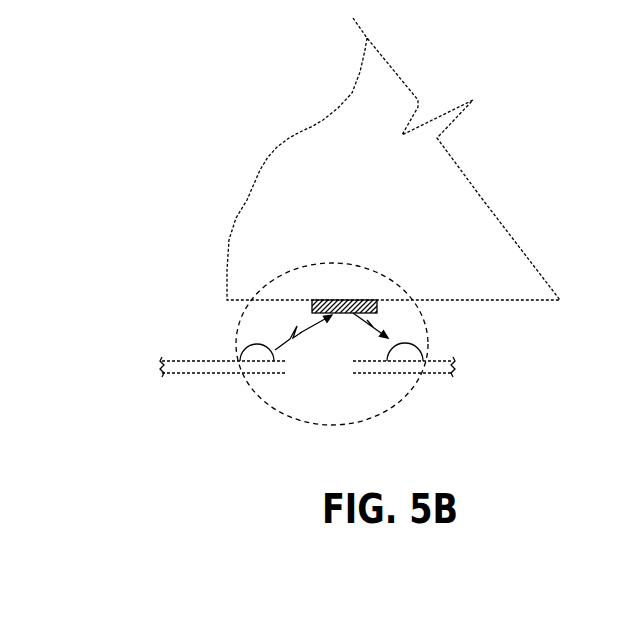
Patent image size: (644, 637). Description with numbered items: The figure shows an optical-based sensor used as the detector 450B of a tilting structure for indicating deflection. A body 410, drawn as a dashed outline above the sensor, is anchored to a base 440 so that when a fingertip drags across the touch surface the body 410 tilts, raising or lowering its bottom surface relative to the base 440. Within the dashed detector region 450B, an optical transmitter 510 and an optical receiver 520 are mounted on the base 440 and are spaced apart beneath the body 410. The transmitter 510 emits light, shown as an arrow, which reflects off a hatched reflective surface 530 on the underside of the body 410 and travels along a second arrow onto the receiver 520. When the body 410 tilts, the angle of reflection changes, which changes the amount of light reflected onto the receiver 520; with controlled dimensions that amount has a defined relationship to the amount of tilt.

The body 410 is at (393, 159).
The detector 450B is at (300, 280).
The base 440 is at (200, 358).
The optical transmitter 510 is at (250, 370).
The optical receiver 520 is at (405, 365).
The reflective surface 530 is at (376, 300).